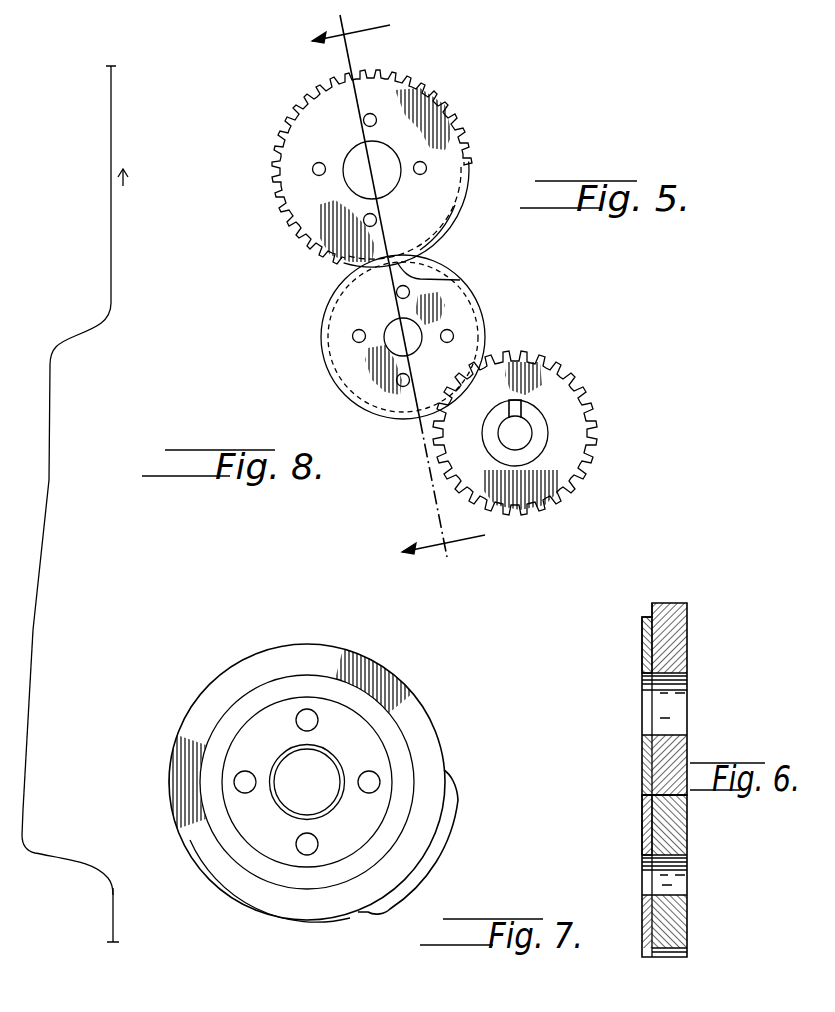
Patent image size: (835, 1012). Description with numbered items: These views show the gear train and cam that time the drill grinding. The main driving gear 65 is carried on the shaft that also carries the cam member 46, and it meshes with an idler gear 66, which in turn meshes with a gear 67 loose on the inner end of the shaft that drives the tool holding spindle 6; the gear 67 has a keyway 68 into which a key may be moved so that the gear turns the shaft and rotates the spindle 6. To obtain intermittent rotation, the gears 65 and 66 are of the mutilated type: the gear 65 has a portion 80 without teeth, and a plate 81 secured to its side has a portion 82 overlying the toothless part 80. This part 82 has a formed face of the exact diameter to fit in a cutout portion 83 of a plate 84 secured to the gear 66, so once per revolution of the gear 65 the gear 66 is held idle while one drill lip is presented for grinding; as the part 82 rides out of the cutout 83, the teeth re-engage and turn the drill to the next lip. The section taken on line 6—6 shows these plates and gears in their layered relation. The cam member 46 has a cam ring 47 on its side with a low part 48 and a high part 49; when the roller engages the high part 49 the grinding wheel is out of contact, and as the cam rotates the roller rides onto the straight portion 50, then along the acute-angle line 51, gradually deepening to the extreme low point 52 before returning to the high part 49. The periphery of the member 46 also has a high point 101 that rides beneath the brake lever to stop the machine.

In FIG. 5, the spindle 6 is at (398, 297).
In FIG. 7, the cam member 46 is at (393, 747).
In FIG. 7, the cam ring 47 is at (238, 903).
In FIG. 8, the low part of the cam 48 is at (57, 497).
In FIG. 7, the low part of the cam 48 is at (307, 782).
In FIG. 8, the high part of the cam 49 is at (129, 504).
In FIG. 7, the high part of the cam 49 is at (307, 784).
In FIG. 8, the straight portion of the low part 50 is at (55, 411).
In FIG. 8, the acute-angle portion 51 is at (33, 632).
In FIG. 8, the extreme low point 52 is at (25, 822).
In FIG. 5, the main driving gear 65 is at (417, 83).
In FIG. 6, the main driving gear 65 is at (687, 640).
In FIG. 5, the idler gear 66 is at (333, 383).
In FIG. 6, the idler gear 66 is at (682, 837).
In FIG. 5, the gear 67 is at (515, 433).
In FIG. 5, the keyway 68 is at (508, 414).
In FIG. 5, the portion unprovided with teeth 80 is at (447, 230).
In FIG. 5, the plate 81 is at (437, 162).
In FIG. 6, the plate 81 is at (642, 652).
In FIG. 5, the portion overlying the toothless part 82 is at (463, 210).
In FIG. 6, the portion overlying the toothless part 82 is at (643, 800).
In FIG. 5, the cutout portion 83 is at (457, 280).
In FIG. 5, the plate 84 is at (403, 336).
In FIG. 6, the plate 84 is at (642, 835).
In FIG. 7, the high point of the cam 101 is at (455, 827).